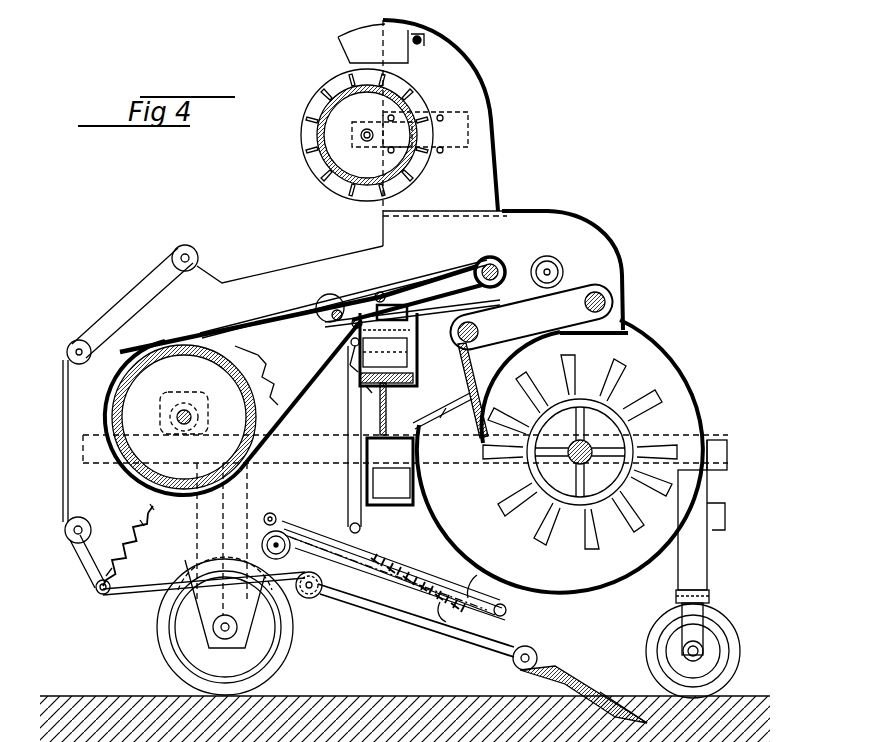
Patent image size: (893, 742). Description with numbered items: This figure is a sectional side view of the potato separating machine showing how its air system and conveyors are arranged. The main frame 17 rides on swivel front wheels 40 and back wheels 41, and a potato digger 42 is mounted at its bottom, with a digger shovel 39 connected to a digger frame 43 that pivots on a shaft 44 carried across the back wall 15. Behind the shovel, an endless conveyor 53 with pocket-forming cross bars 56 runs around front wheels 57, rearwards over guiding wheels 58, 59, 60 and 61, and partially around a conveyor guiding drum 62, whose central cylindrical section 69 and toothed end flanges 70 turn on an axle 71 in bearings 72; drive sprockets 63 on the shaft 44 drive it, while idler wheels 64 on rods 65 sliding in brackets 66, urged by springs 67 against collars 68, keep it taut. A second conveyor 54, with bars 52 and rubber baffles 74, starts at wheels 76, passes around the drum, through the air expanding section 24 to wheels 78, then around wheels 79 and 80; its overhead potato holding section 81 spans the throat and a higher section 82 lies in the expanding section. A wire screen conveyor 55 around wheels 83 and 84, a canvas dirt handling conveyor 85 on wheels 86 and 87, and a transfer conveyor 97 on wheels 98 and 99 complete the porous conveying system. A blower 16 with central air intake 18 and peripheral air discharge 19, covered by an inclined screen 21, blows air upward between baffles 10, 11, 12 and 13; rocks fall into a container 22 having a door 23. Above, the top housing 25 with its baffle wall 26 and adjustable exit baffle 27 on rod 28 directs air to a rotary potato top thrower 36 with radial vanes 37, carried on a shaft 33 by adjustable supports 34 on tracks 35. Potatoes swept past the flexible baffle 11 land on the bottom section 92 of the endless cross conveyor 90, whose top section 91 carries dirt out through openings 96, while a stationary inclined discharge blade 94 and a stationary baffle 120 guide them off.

The baffle 10 is at (403, 385).
The baffle 11 is at (420, 347).
The baffle 12 is at (470, 362).
The baffle 13 is at (430, 305).
The back wall 15 is at (276, 276).
The blower 16 is at (672, 366).
The main frame 17 is at (724, 438).
The central air intake 18 is at (618, 418).
The peripheral air discharge 19 is at (450, 405).
The screen 21 is at (444, 420).
The container 22 is at (398, 504).
The door 23 is at (392, 500).
The air expanding section 24 is at (456, 282).
The top housing 25 is at (504, 110).
The baffle wall 26 is at (496, 136).
The adjustable exit baffle 27 is at (348, 38).
The rod 28 is at (424, 40).
The shaft 33 is at (367, 128).
The adjustable supports 34 is at (368, 142).
The tracks 35 is at (436, 112).
The rotary potato top thrower 36 is at (313, 77).
The radial vanes 37 is at (338, 90).
The digger shovel 39 is at (600, 700).
The swivel front wheels 40 is at (728, 630).
The back wheels 41 is at (160, 635).
The potato digger 42 is at (594, 670).
The digger frame 43 is at (420, 610).
The shaft 44 is at (279, 542).
The bars 52 is at (482, 585).
The conveyor 53 is at (472, 662).
The conveyor 54 is at (296, 297).
The conveyor 55 is at (305, 406).
The cross bars 56 is at (451, 619).
The front wheels 57 is at (533, 652).
The guiding wheels 58 is at (312, 598).
The guiding wheels 59 is at (65, 530).
The guiding wheels 60 is at (67, 350).
The guiding wheels 61 is at (195, 251).
The conveyor guiding drum 62 is at (240, 360).
The drive sprockets 63 is at (272, 513).
The idler wheels 64 is at (100, 594).
The rods 65 is at (132, 545).
The brackets 66 is at (140, 540).
The springs 67 is at (140, 530).
The collars 68 is at (118, 560).
The central cylindrical section 69 is at (248, 350).
The end flanges 70 is at (268, 372).
The axle 71 is at (192, 417).
The bearings 72 is at (190, 397).
The rubber baffles 74 is at (378, 572).
The wheels 76 is at (507, 609).
The wheels 78 is at (559, 268).
The wheels 79 is at (352, 348).
The wheels 80 is at (362, 527).
The overhead potato holding section 81 is at (412, 330).
The conveyor section 82 is at (452, 262).
The wheels 83 is at (500, 261).
The wheels 84 is at (356, 330).
The dirt handling conveyor 85 is at (319, 353).
The wheels 86 is at (340, 308).
The wheels 87 is at (382, 292).
The endless cross conveyor 90 is at (380, 384).
The top section 91 is at (400, 305).
The bottom section 92 is at (368, 390).
The stationary inclined discharge blade 94 is at (400, 350).
The openings 96 is at (386, 400).
The endless conveyor 97 is at (590, 294).
The wheels 98 is at (608, 298).
The wheels 99 is at (480, 332).
The stationary baffle 120 is at (354, 370).